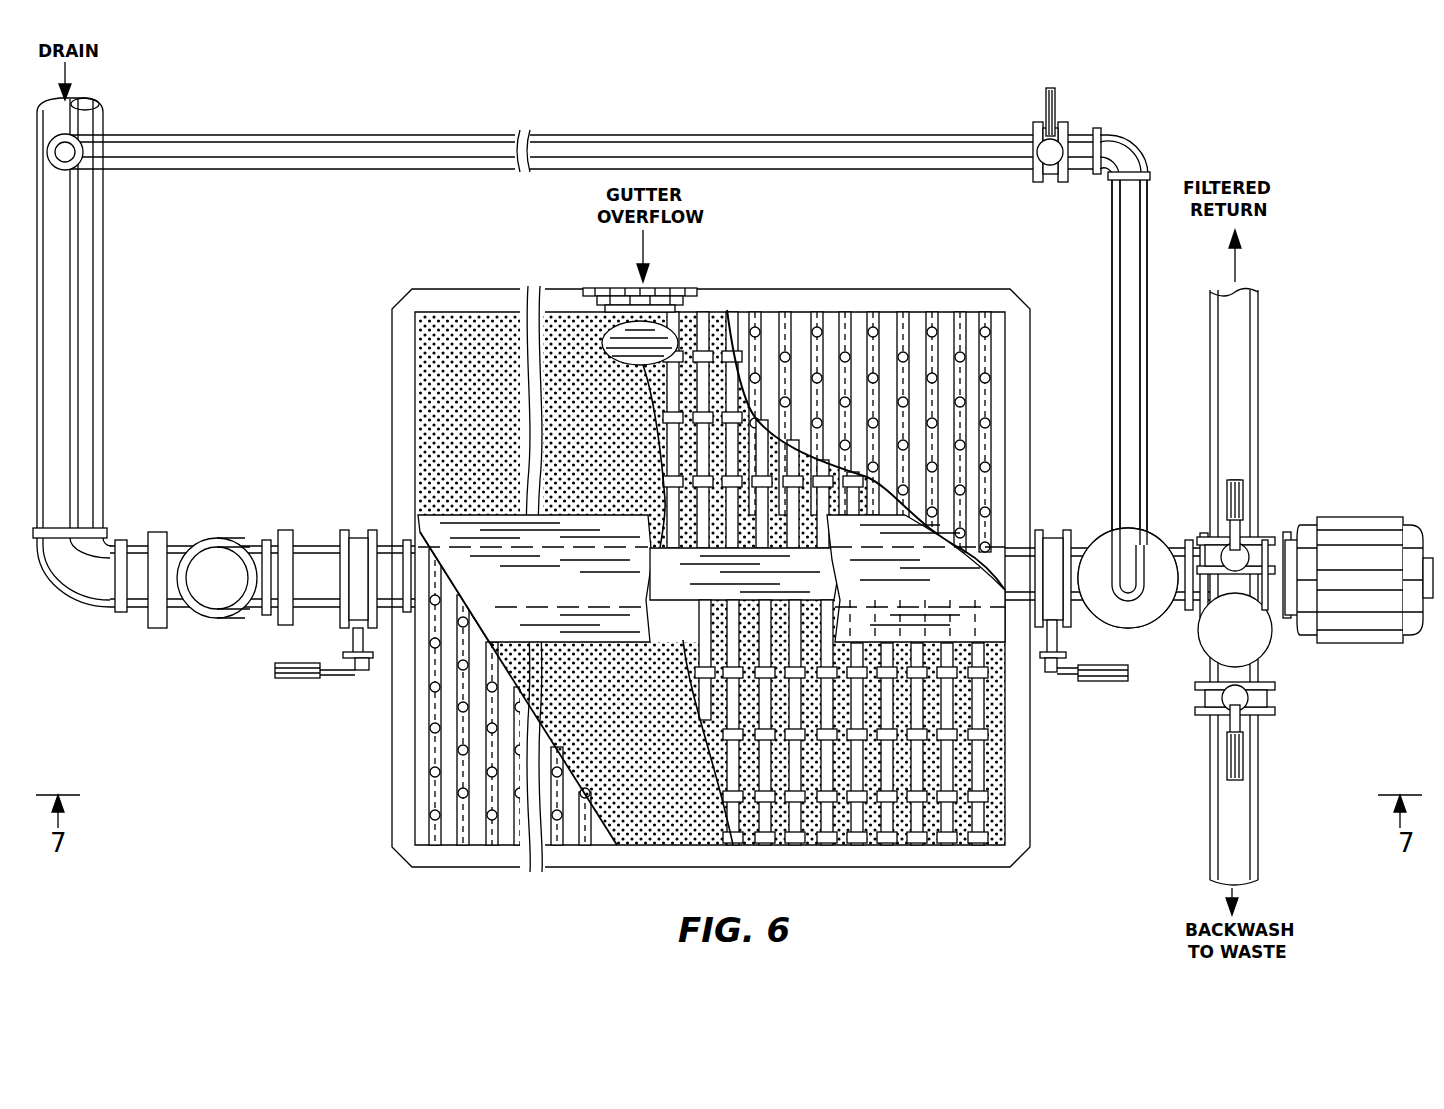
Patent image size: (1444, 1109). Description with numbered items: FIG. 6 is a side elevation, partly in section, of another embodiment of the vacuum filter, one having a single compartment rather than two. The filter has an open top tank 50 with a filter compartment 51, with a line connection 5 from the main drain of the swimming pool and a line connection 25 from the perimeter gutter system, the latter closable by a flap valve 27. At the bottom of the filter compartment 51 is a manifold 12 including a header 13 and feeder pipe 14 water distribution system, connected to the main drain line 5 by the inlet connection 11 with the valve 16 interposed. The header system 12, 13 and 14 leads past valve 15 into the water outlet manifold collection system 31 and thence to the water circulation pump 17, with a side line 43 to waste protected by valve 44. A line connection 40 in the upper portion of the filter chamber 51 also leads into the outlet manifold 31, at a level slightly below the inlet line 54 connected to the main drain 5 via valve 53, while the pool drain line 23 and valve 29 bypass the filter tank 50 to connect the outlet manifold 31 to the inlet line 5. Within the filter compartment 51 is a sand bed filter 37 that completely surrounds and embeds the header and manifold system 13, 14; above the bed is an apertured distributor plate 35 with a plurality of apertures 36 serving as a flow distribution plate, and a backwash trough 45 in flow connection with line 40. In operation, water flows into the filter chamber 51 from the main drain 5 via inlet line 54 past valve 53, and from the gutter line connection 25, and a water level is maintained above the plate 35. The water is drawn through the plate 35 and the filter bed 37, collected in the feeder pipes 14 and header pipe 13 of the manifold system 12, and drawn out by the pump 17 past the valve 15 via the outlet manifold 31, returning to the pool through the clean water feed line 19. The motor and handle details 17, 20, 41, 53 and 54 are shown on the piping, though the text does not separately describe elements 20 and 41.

The line connection from main drain 5 is at (70, 290).
The inlet connection 11 is at (330, 575).
The manifold 12 is at (648, 520).
The header pipe 13 is at (690, 590).
The feeder pipe 14 is at (762, 810).
The valve 15 is at (1050, 545).
The valve 16 is at (360, 540).
The water circulation pump 17 is at (1322, 506).
The clean water feed line 19 is at (1245, 370).
The return valve 20 is at (1256, 545).
The pool drain line 23 is at (372, 142).
The line connection from gutter system 25 is at (668, 296).
The valve 27 is at (618, 328).
The valve 29 is at (1062, 130).
The water outlet manifold collection system 31 is at (1120, 243).
The distributor plate 35 is at (905, 330).
The apertures 36 is at (786, 352).
The sand bed filter 37 is at (612, 425).
The line connection 40 is at (1028, 610).
The valve handle 41 is at (1058, 632).
The side line to waste 43 is at (1225, 818).
The valve 44 is at (1212, 705).
The backwash trough 45 is at (500, 530).
The open top tank 50 is at (411, 289).
The filter compartment 51 is at (446, 394).
The valve 53 is at (350, 670).
The inlet line 54 is at (402, 650).